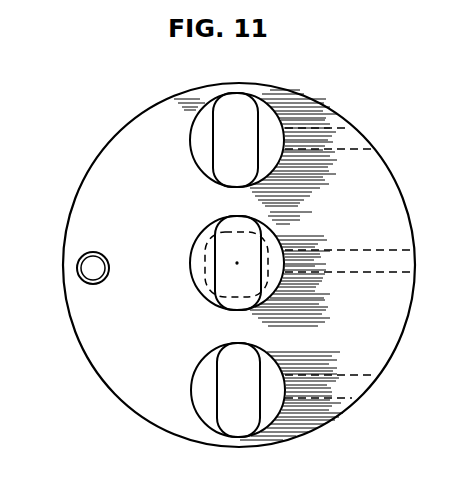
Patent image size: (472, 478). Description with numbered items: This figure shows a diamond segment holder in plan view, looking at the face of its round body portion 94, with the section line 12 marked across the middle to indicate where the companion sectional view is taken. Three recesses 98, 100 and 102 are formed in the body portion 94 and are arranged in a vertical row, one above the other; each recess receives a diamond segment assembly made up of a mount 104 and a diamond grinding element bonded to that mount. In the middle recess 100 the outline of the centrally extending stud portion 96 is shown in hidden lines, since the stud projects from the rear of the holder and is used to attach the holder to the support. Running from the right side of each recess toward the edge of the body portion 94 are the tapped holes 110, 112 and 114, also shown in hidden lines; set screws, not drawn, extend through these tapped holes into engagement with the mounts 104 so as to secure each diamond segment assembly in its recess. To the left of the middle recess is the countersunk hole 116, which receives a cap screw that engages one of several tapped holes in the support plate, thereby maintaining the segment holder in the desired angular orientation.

The body portion 94 is at (125, 132).
The section line 12- 12 is at (60, 268).
The countersunk hole 116 is at (92, 263).
The recess 102 is at (218, 140).
The mount 104 is at (270, 157).
The tapped hole 114 is at (323, 130).
The recess 100 is at (197, 281).
The centrally extending stud portion 96 is at (205, 252).
The tapped hole 112 is at (345, 258).
The recess 98 is at (215, 390).
The tapped hole 110 is at (315, 393).